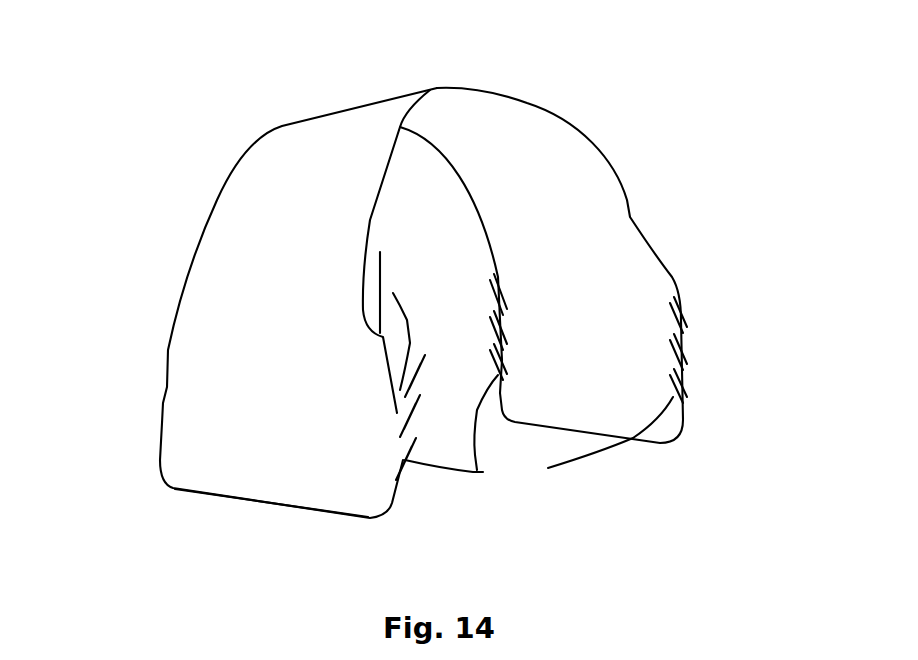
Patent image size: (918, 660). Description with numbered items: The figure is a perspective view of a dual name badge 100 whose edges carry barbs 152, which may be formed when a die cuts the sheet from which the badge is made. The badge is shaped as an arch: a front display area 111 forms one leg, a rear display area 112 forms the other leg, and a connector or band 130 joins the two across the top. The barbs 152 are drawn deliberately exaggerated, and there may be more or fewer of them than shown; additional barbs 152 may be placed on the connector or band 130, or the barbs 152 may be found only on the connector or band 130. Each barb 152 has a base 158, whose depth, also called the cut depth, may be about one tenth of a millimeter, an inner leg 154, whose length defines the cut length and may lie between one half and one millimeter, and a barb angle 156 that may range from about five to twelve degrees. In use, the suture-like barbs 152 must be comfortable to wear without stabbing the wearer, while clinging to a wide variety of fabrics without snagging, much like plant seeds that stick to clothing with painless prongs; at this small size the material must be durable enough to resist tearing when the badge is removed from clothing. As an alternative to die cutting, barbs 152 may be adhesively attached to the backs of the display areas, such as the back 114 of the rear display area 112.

The dual name badge 100 is at (252, 91).
The front display area 111 is at (245, 472).
The rear display area 112 is at (683, 307).
The back of the rear display area 114 is at (620, 318).
The connector or band 130 is at (487, 113).
The barb 152 is at (163, 403).
The inner leg 154 is at (410, 380).
The barb angle 156 is at (393, 293).
The base 158 is at (380, 252).